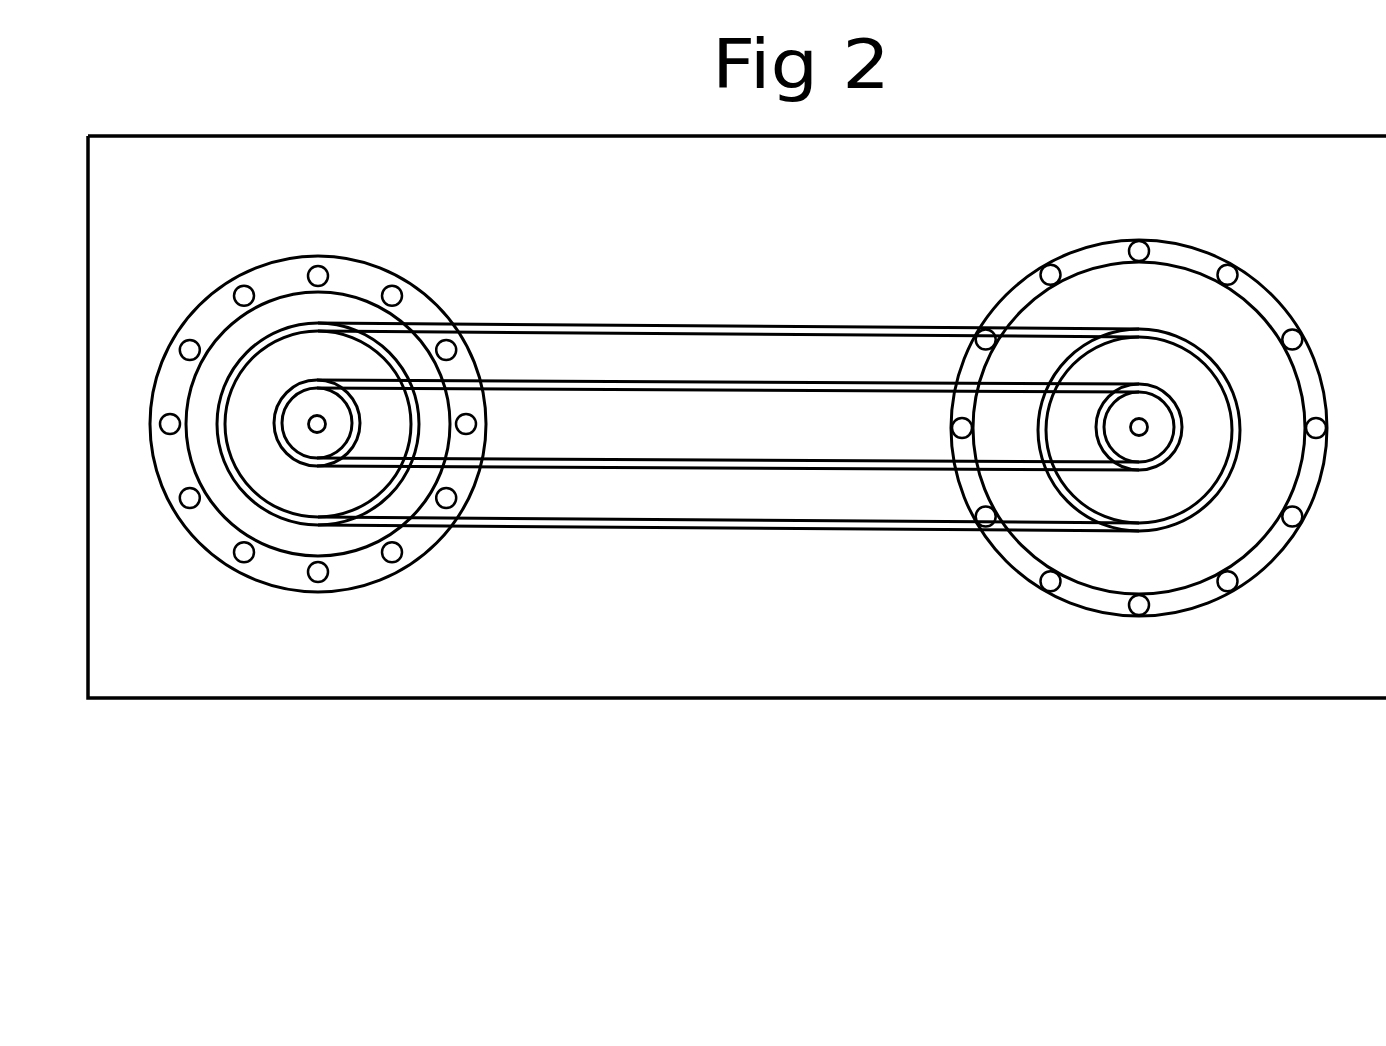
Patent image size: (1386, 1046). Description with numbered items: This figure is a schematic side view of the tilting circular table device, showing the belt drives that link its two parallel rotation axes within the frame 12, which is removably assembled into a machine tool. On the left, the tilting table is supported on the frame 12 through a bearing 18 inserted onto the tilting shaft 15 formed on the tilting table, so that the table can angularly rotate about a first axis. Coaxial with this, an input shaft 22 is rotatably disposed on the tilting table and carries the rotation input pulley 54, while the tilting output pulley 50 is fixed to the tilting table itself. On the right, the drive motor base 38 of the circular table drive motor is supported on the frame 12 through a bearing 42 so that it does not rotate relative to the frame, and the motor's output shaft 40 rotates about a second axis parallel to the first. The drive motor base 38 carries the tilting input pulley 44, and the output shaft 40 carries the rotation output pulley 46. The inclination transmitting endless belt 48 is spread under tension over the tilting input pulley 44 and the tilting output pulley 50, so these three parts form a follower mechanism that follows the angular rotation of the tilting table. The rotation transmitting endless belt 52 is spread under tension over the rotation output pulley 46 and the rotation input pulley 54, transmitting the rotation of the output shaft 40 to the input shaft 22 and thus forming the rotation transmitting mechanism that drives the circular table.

The frame 12 is at (318, 670).
The tilting shaft 15 is at (348, 537).
The bearing 18 is at (208, 537).
The input shaft 22 is at (310, 423).
The tilting output pulley 50 is at (295, 365).
The rotation input pulley 54 is at (305, 447).
The rotation transmitting endless belt 52 is at (605, 383).
The inclination transmitting endless belt 48 is at (668, 528).
The drive motor base 38 is at (1092, 567).
The bearing 42 is at (1255, 547).
The tilting input pulley 44 is at (1132, 350).
The rotation output pulley 46 is at (1145, 450).
The output shaft 40 is at (1144, 418).